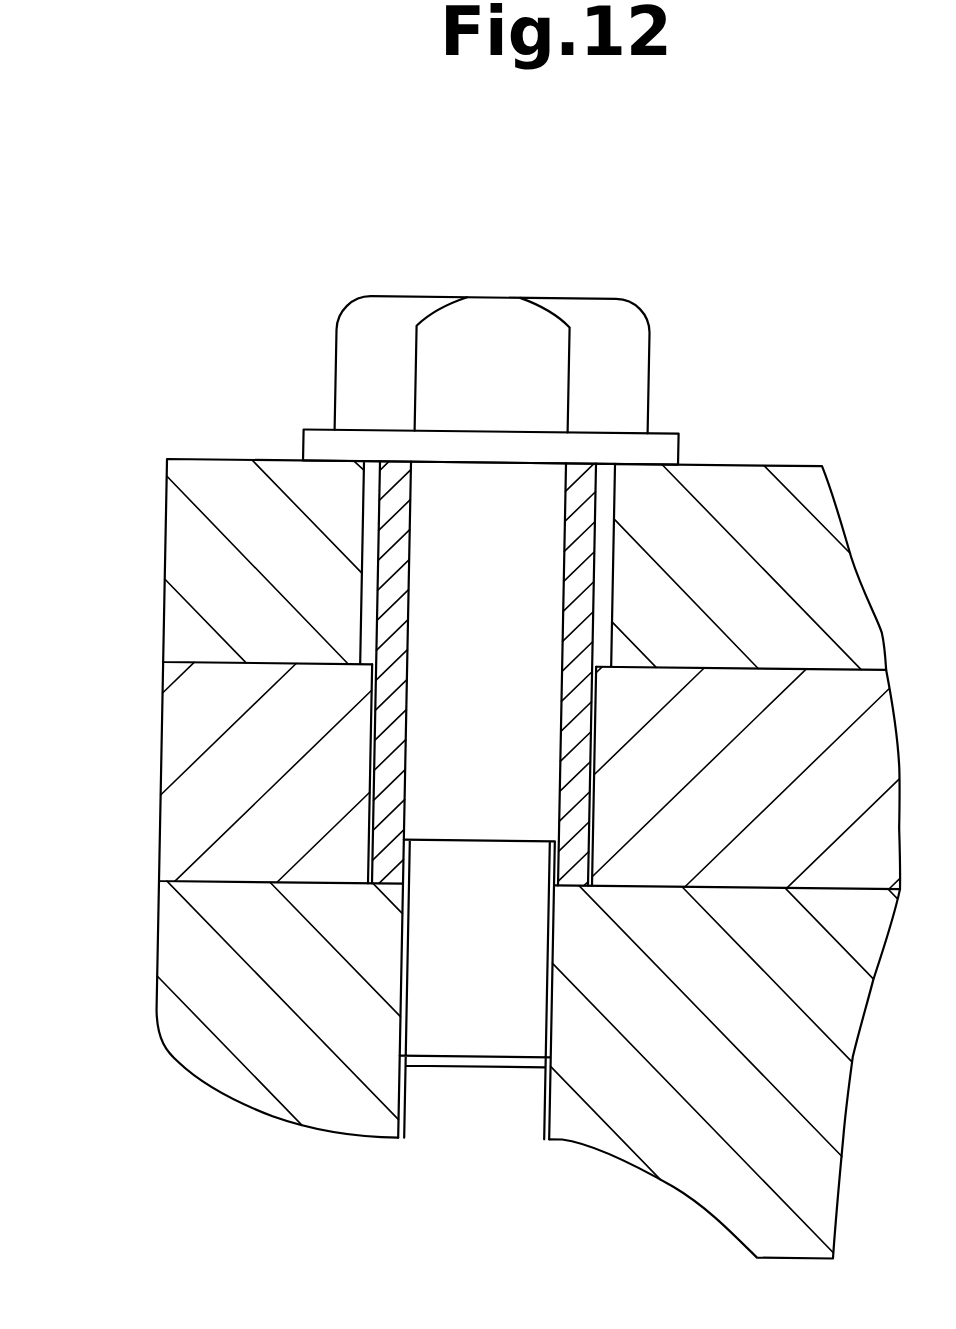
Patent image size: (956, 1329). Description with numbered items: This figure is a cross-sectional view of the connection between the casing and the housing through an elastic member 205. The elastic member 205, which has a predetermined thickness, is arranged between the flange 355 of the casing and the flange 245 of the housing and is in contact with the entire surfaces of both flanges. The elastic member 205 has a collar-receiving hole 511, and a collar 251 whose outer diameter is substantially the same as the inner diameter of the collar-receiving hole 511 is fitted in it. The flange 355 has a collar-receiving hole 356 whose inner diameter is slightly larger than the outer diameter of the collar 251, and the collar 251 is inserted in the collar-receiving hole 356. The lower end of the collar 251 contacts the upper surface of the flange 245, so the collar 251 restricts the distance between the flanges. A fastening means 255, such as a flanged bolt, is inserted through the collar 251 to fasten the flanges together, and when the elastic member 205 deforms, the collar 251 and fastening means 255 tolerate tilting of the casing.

The fastening means 255 is at (492, 311).
The collar-receiving hole 356 is at (371, 485).
The collar 251 is at (588, 500).
The flange 355 is at (213, 494).
The elastic member 205 is at (179, 738).
The collar-receiving hole 511 is at (380, 841).
The flange 245 is at (182, 1004).